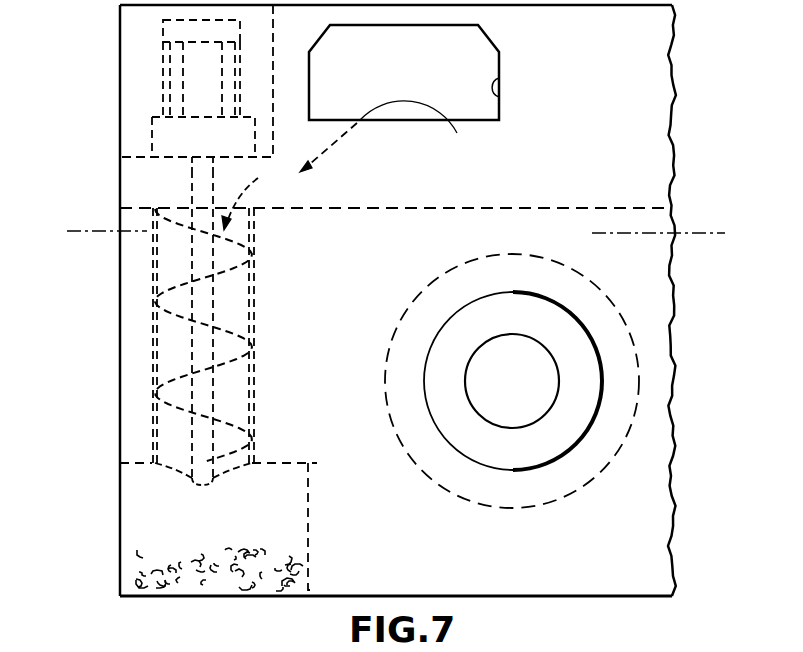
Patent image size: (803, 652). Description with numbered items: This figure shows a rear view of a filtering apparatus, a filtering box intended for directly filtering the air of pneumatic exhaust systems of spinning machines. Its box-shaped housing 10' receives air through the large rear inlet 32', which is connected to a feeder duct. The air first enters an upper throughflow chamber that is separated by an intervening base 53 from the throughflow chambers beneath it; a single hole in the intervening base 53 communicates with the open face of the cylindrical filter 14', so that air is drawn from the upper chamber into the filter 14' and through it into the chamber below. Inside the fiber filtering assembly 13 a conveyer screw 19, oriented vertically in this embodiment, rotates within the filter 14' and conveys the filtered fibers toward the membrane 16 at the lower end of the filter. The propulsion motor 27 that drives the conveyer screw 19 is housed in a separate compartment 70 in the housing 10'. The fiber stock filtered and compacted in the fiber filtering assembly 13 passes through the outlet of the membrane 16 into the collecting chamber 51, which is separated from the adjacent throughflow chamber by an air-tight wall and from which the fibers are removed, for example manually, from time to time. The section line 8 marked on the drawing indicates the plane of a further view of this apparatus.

The box-shaped housing 10' is at (365, 300).
The propulsion motor 27 is at (177, 35).
The separate compartment 70 is at (145, 60).
The rear inlet 32' is at (439, 98).
The section line 8- 8 is at (73, 231).
The intervening base 53 is at (432, 210).
The fiber filtering assembly 13 is at (153, 275).
The cylindrical filter 14' is at (268, 324).
The conveyer screw 19 is at (248, 339).
The membrane 16 is at (167, 465).
The collecting chamber 51 is at (140, 515).